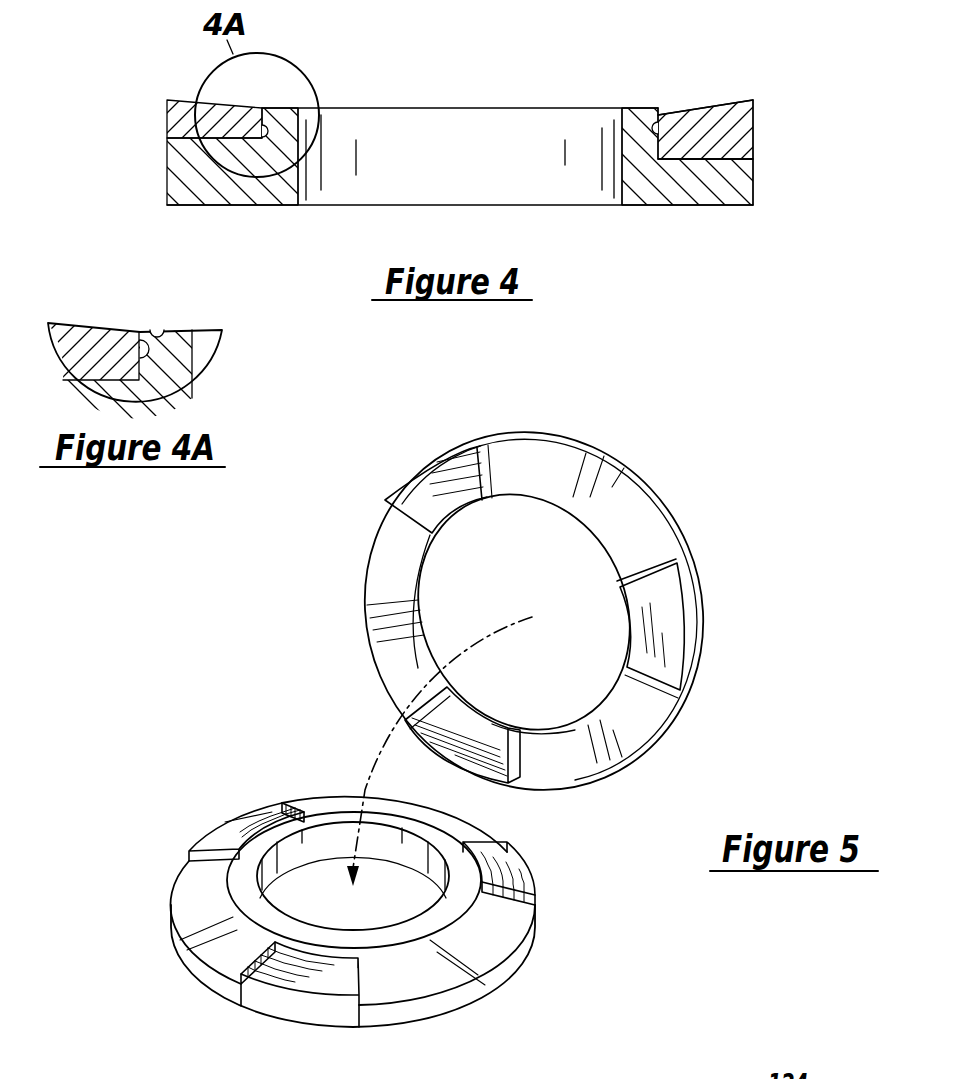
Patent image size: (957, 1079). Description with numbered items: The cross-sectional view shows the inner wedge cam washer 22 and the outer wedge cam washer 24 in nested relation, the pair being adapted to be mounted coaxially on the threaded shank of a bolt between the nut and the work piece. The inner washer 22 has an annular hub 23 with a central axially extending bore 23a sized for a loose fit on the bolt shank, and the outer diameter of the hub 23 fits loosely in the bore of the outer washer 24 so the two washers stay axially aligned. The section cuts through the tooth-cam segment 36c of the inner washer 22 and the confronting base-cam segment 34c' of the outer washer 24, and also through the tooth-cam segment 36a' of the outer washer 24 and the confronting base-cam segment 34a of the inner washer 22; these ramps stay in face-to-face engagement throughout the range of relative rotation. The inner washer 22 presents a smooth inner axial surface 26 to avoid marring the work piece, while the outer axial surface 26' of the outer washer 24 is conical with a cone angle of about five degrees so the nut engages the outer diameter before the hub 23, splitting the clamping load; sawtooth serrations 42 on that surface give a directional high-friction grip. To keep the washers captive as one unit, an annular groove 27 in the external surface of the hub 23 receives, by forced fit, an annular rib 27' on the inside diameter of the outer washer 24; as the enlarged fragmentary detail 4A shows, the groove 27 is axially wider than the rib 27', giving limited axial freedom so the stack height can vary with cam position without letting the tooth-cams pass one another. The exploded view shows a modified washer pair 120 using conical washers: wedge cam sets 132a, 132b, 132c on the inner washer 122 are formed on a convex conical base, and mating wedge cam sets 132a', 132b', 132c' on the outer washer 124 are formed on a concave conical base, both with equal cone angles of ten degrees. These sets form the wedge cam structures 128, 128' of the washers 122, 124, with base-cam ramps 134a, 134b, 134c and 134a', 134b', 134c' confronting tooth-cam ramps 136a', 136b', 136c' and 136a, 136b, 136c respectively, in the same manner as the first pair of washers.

In FIG. 4, the inner wedge cam washer 22 is at (774, 185).
In FIG. 4, the annular hub 23 is at (275, 108).
In FIG. 4, the central axially extending bore 23a is at (615, 182).
In FIG. 4, the outer wedge cam washer 24 is at (752, 93).
In FIG. 4, the smooth inner axial surface 26 is at (706, 205).
In FIG. 4, the conical outer axial surface 26' is at (656, 69).
In FIG. 4, the annular groove 27 is at (221, 97).
In FIG. 4A, the annular groove 27 is at (120, 353).
In FIG. 4, the annular rib 27' is at (611, 99).
In FIG. 4A, the annular rib 27' is at (188, 313).
In FIG. 4, the base-cam segment 34a is at (753, 170).
In FIG. 4, the base-cam segment 34c' is at (167, 119).
In FIG. 4, the tooth-cam segment 36a' is at (761, 129).
In FIG. 4, the tooth-cam segment 36c is at (167, 170).
In FIG. 4, the sawtooth serrations 42 is at (700, 108).
In FIG. 4, the detail circle 4A is at (257, 115).
In FIG. 5, the ring assembly 120 is at (245, 628).
In FIG. 5, the inner washer 122 is at (153, 877).
In FIG. 5, the outer washer 124 is at (725, 590).
In FIG. 5, the annular body 128 is at (414, 901).
In FIG. 5, the annular body 128' is at (440, 612).
In FIG. 5, the wedge cam set 132a is at (576, 930).
In FIG. 5, the wedge cam set 132b is at (175, 995).
In FIG. 5, the wedge cam set 132c is at (320, 763).
In FIG. 5, the wedge cam set 132a' is at (745, 699).
In FIG. 5, the wedge cam set 132b' is at (631, 460).
In FIG. 5, the wedge cam set 132c' is at (355, 688).
In FIG. 5, the flat segment 134a is at (527, 972).
In FIG. 5, the flat segment 134b is at (149, 928).
In FIG. 5, the flat segment 134c is at (397, 815).
In FIG. 5, the flat segment 134a' is at (677, 742).
In FIG. 5, the flat segment 134b' is at (551, 422).
In FIG. 5, the flat segment 134c' is at (343, 604).
In FIG. 5, the raised pad 136a is at (558, 887).
In FIG. 5, the raised pad 136b is at (300, 1010).
In FIG. 5, the raised pad 136c is at (246, 792).
In FIG. 5, the raised pad 136a' is at (709, 624).
In FIG. 5, the raised pad 136b' is at (436, 463).
In FIG. 5, the raised pad 136c' is at (450, 741).